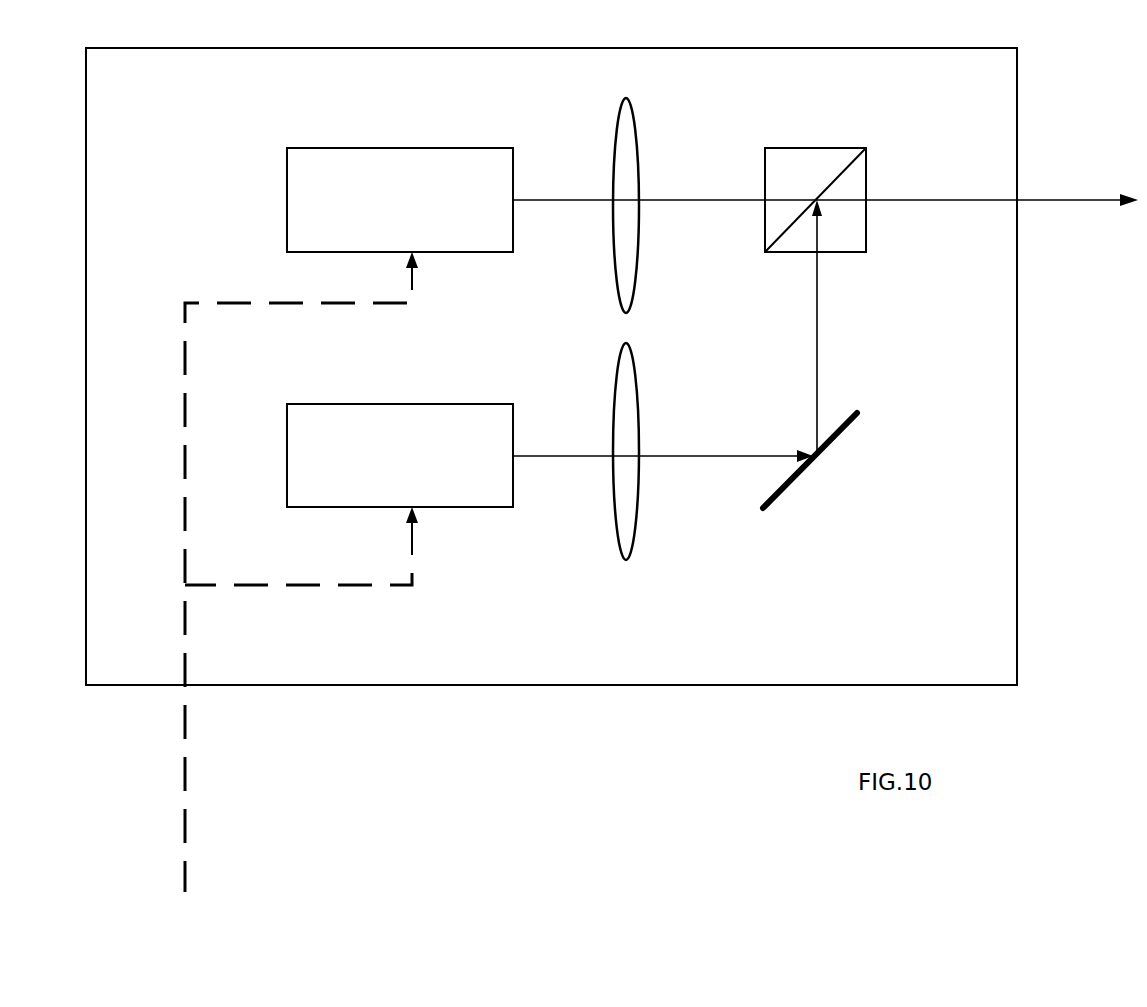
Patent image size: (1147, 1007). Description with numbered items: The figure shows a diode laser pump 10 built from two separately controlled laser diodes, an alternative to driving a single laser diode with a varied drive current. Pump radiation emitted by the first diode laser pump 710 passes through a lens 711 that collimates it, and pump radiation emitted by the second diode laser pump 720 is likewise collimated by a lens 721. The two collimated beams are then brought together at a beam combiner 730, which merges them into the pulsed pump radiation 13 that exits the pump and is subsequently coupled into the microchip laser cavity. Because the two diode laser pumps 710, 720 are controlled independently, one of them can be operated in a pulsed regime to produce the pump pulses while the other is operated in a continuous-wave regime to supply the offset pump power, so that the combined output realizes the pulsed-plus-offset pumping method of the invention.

The diode laser pump 10 is at (775, 48).
The pulsed pump radiation 13 is at (1058, 198).
The diode laser pump 710 is at (332, 148).
The lens 711 is at (640, 128).
The diode laser pump 720 is at (360, 404).
The lens 721 is at (636, 535).
The beam combiner 730 is at (805, 148).